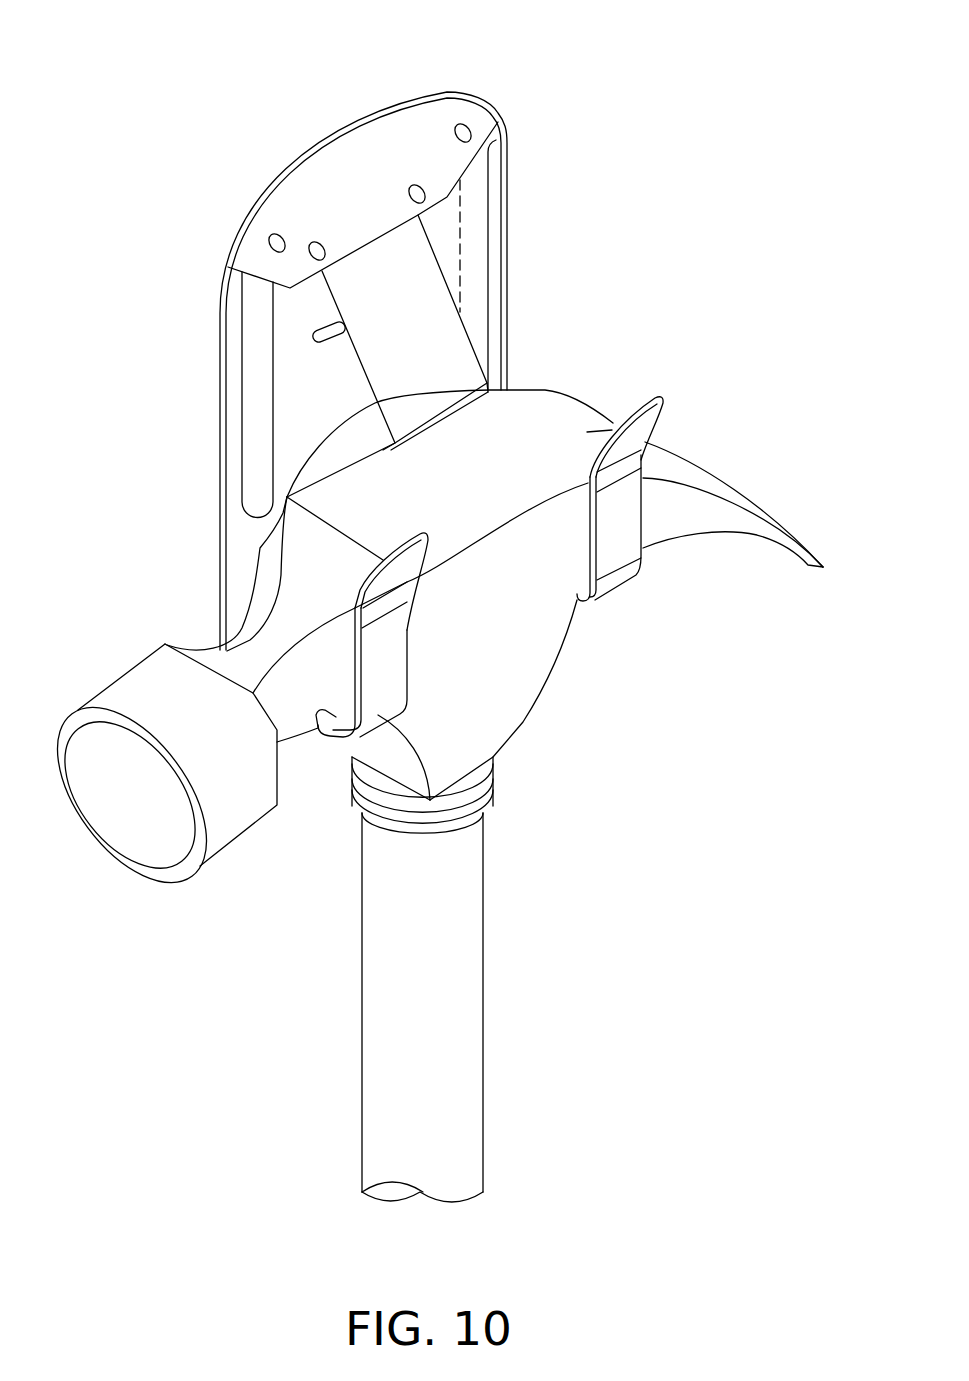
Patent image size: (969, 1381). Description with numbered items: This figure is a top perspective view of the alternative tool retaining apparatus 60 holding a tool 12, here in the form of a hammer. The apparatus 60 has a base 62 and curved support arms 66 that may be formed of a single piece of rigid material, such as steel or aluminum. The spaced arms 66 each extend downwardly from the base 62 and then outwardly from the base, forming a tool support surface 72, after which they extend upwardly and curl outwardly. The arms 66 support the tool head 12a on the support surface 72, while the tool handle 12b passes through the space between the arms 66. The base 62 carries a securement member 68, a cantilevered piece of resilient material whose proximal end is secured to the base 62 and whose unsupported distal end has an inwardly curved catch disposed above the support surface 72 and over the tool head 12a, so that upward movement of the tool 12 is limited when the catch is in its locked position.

The tool retaining apparatus 60 is at (483, 418).
The base 62 is at (327, 399).
The securement member 68 is at (448, 355).
The curved support arms 66 is at (428, 543).
The tool support surface 72 is at (320, 728).
The tool 12 is at (434, 1055).
The tool head 12a is at (737, 515).
The tool handle 12b is at (519, 718).